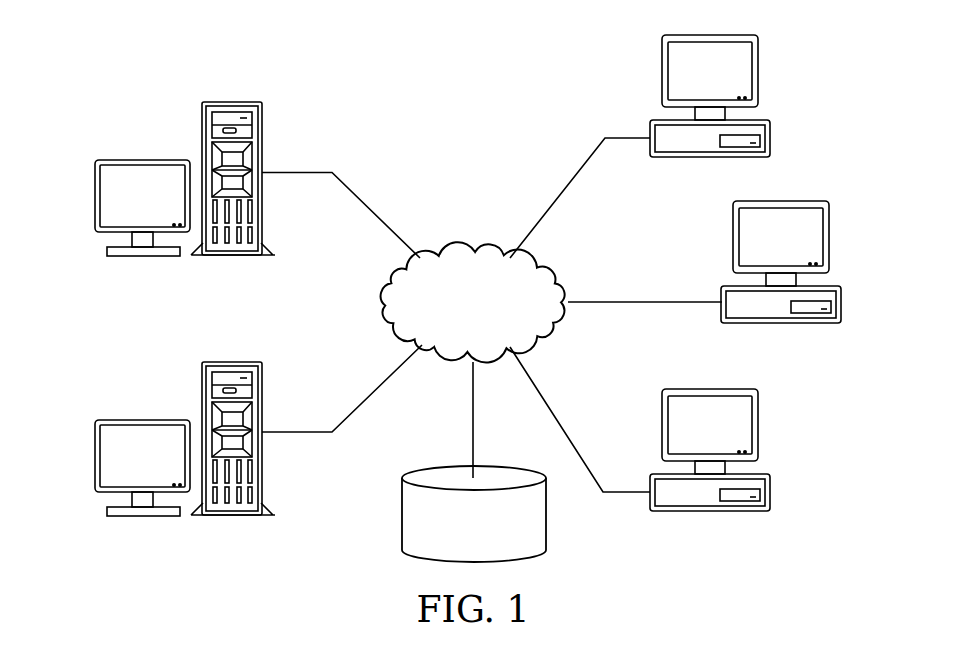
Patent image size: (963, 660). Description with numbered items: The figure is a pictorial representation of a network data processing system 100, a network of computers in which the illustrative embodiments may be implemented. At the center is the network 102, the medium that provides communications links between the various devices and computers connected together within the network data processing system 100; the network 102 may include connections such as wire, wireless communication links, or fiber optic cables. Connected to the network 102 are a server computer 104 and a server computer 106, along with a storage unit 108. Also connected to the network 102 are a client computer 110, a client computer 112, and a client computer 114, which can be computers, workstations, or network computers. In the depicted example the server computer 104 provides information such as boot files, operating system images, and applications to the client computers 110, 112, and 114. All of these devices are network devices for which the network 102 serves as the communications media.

The network data processing system 100 is at (333, 78).
The network 102 is at (446, 249).
The server computer 104 is at (95, 196).
The server computer 106 is at (95, 456).
The storage unit 108 is at (402, 514).
The client computer 110 is at (770, 128).
The client computer 112 is at (841, 312).
The client computer 114 is at (770, 497).